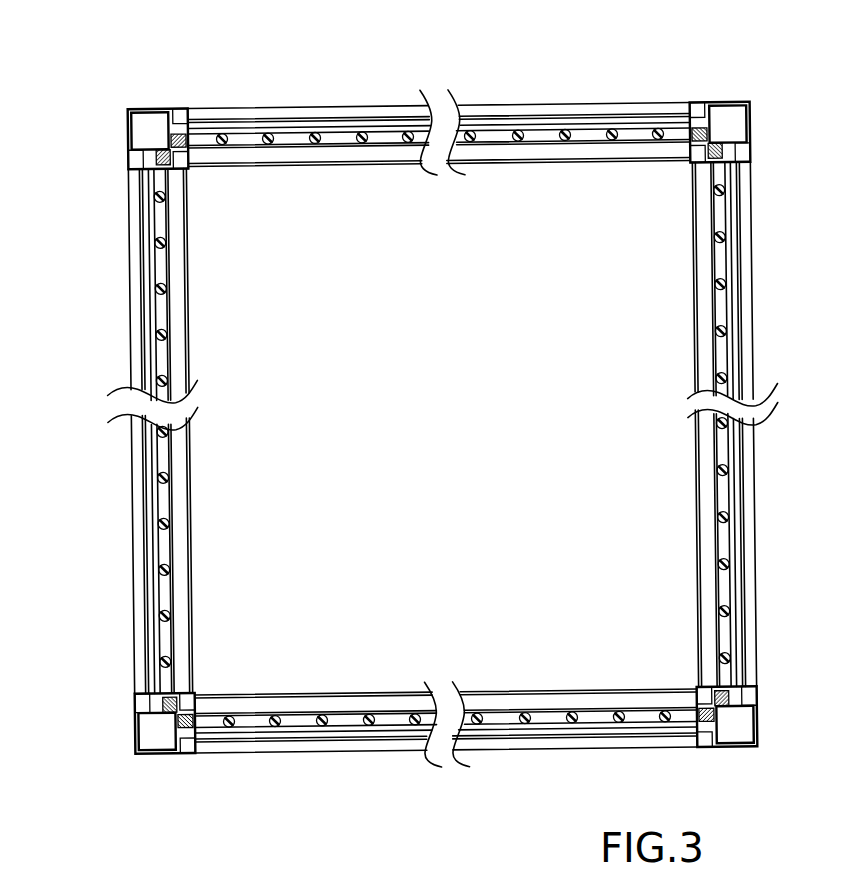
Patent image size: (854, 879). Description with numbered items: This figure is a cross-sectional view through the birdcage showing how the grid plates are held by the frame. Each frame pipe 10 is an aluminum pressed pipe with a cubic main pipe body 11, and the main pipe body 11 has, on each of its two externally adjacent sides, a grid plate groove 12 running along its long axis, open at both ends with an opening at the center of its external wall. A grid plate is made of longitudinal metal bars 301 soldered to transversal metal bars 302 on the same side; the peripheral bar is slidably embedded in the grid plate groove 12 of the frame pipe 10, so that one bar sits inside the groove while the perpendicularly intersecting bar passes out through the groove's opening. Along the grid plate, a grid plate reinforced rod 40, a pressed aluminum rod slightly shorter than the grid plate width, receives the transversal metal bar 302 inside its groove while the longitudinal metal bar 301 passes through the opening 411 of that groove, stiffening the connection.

The frame pipe 10 is at (142, 97).
The main pipe body 11 is at (129, 130).
The grid plate groove 12 is at (181, 107).
The longitudinal metal bar 301 is at (150, 300).
The transversal metal bar 302 is at (148, 256).
The grid plate reinforced rod 40 is at (320, 158).
The opening 411 is at (166, 262).